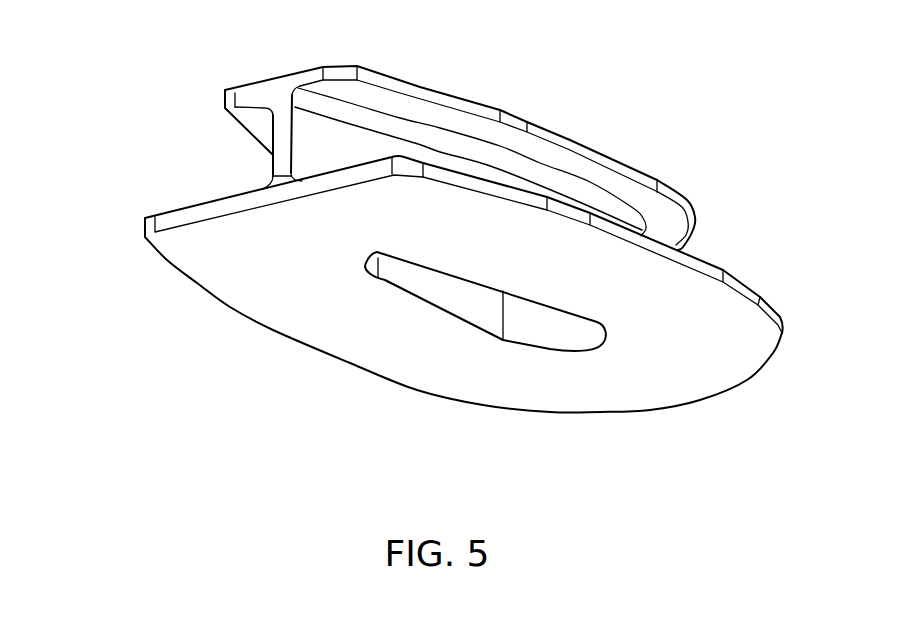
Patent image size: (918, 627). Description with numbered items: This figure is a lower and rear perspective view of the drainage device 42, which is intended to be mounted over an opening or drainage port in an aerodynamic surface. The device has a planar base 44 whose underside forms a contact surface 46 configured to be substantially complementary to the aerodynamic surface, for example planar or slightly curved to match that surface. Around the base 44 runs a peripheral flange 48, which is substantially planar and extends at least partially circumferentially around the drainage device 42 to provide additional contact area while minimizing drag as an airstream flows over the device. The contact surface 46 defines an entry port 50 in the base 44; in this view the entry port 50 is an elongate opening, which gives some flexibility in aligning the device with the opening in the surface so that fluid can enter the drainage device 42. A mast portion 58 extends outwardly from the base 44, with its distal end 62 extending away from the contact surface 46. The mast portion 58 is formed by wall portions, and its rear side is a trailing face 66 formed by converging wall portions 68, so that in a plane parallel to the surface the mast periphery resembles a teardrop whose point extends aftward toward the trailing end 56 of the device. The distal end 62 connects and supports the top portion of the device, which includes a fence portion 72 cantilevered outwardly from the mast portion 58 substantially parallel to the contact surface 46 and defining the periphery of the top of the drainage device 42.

The drainage device 42 is at (700, 88).
The trailing end 56 is at (155, 156).
The base 44 is at (270, 327).
The contact surface 46 is at (647, 396).
The peripheral flange 48 is at (758, 288).
The entry port 50 is at (447, 312).
The mast portion 58 is at (492, 168).
The distal end 62 is at (588, 183).
The trailing face 66 is at (282, 125).
The converging wall portions 68 is at (350, 147).
The fence portion 72 is at (674, 183).